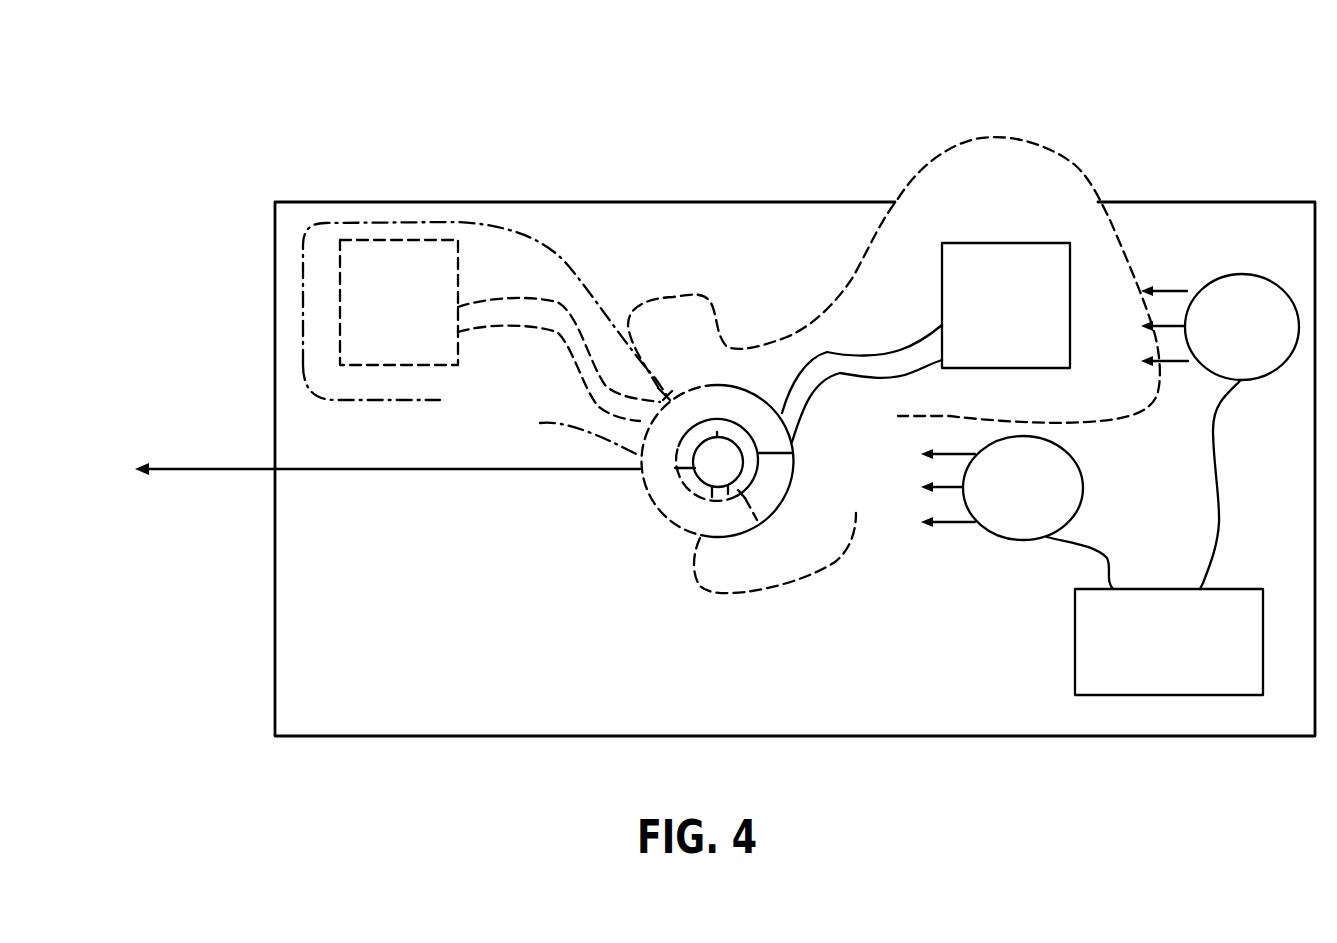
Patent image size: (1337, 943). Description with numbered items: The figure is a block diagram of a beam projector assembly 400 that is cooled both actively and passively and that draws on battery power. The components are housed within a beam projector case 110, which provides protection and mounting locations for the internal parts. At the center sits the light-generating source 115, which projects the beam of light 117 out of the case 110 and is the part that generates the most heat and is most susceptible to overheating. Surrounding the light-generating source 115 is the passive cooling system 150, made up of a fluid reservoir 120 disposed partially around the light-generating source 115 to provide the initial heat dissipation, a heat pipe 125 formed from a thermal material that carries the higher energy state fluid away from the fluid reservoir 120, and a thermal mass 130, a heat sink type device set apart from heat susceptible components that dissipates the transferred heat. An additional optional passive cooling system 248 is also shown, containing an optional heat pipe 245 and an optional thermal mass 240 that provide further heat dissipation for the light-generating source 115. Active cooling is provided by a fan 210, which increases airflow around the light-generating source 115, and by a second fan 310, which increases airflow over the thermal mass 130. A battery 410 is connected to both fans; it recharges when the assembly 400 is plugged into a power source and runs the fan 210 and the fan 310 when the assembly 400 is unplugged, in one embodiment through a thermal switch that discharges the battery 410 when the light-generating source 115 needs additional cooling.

The beam projector assembly 400 is at (717, 50).
The beam projector case 110 is at (407, 202).
The light-generating source 115 is at (712, 463).
The beam of light 117 is at (238, 469).
The fluid reservoir 120 is at (715, 385).
The heat pipe 125 is at (807, 383).
The thermal mass 130 is at (1023, 344).
The passive cooling system 150 is at (1090, 185).
The fan 210 is at (1040, 517).
The optional thermal mass 240 is at (418, 355).
The optional heat pipe 245 is at (548, 333).
The optional passive cooling system 248 is at (312, 298).
The fan 310 is at (1259, 355).
The battery 410 is at (1185, 667).